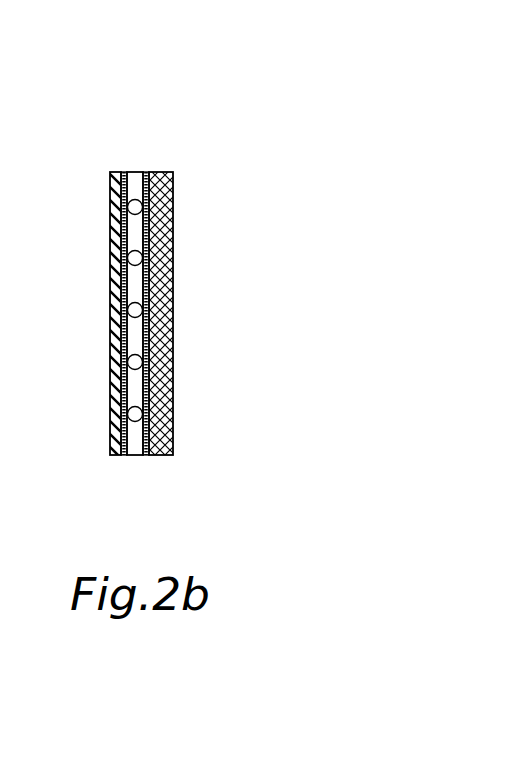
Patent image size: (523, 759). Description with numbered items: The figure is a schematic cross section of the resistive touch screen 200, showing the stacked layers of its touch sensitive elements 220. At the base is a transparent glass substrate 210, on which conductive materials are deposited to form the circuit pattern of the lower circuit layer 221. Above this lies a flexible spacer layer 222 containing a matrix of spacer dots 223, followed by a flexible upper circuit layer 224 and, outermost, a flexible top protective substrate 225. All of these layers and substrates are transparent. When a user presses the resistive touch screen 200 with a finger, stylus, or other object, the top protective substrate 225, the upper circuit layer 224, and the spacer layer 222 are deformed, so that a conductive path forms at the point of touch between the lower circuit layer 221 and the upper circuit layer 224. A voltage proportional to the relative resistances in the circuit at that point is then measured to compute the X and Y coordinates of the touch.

The resistive touch screen 200 is at (232, 138).
The transparent glass substrate 210 is at (160, 327).
The touch sensitive elements 220 is at (150, 167).
The lower circuit layer 221 is at (146, 457).
The flexible spacer layer 222 is at (135, 448).
The spacer dots 223 is at (147, 260).
The flexible upper circuit layer 224 is at (125, 457).
The flexible top protective substrate 225 is at (110, 403).